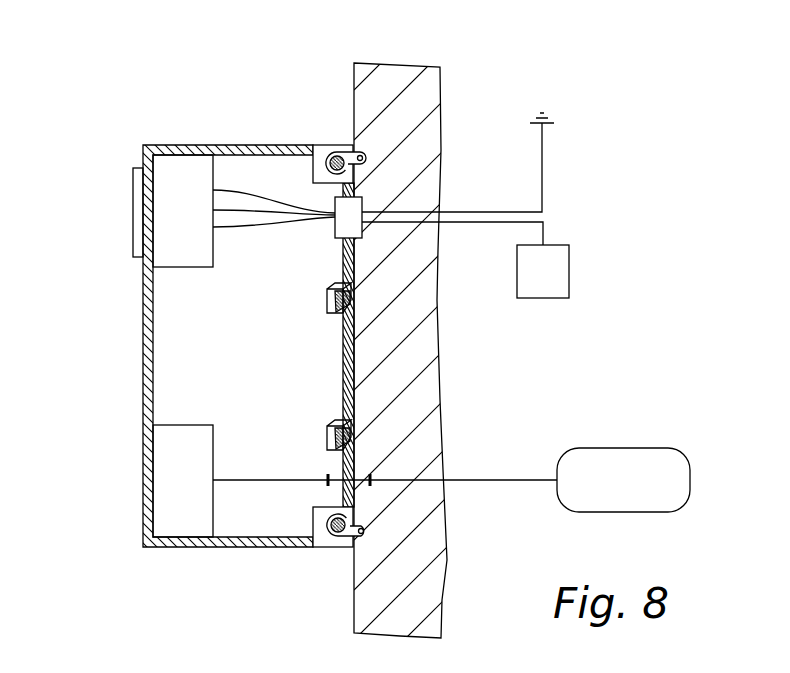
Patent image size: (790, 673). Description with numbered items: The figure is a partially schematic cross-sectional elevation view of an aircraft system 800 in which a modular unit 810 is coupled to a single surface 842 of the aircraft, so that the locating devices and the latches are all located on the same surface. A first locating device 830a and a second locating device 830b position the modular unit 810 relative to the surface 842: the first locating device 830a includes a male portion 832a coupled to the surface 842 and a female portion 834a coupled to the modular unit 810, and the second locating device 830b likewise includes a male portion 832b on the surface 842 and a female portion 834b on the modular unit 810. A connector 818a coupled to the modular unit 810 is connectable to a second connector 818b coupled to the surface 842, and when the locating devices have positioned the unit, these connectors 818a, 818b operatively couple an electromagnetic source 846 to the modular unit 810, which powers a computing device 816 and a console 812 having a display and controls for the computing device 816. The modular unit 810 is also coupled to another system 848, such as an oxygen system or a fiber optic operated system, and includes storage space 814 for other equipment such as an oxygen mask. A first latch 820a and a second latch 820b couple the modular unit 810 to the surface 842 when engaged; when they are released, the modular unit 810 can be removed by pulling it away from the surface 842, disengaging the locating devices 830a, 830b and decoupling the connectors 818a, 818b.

The aircraft system 800 is at (170, 52).
The modular unit 810 is at (143, 345).
The console 812 is at (137, 183).
The storage space 814 is at (173, 495).
The computing device 816 is at (177, 155).
The connector 818a is at (293, 148).
The second connector 818b is at (367, 200).
The first latch 820a is at (336, 135).
The second latch 820b is at (327, 550).
The first locating device 830a is at (372, 321).
The second locating device 830b is at (390, 416).
The male portion 832a is at (355, 297).
The male portion 832b is at (355, 437).
The female portion 834a is at (327, 298).
The female portion 834b is at (327, 432).
The surface 842 is at (357, 503).
The electromagnetic source 846 is at (568, 226).
The other system 848 is at (643, 448).